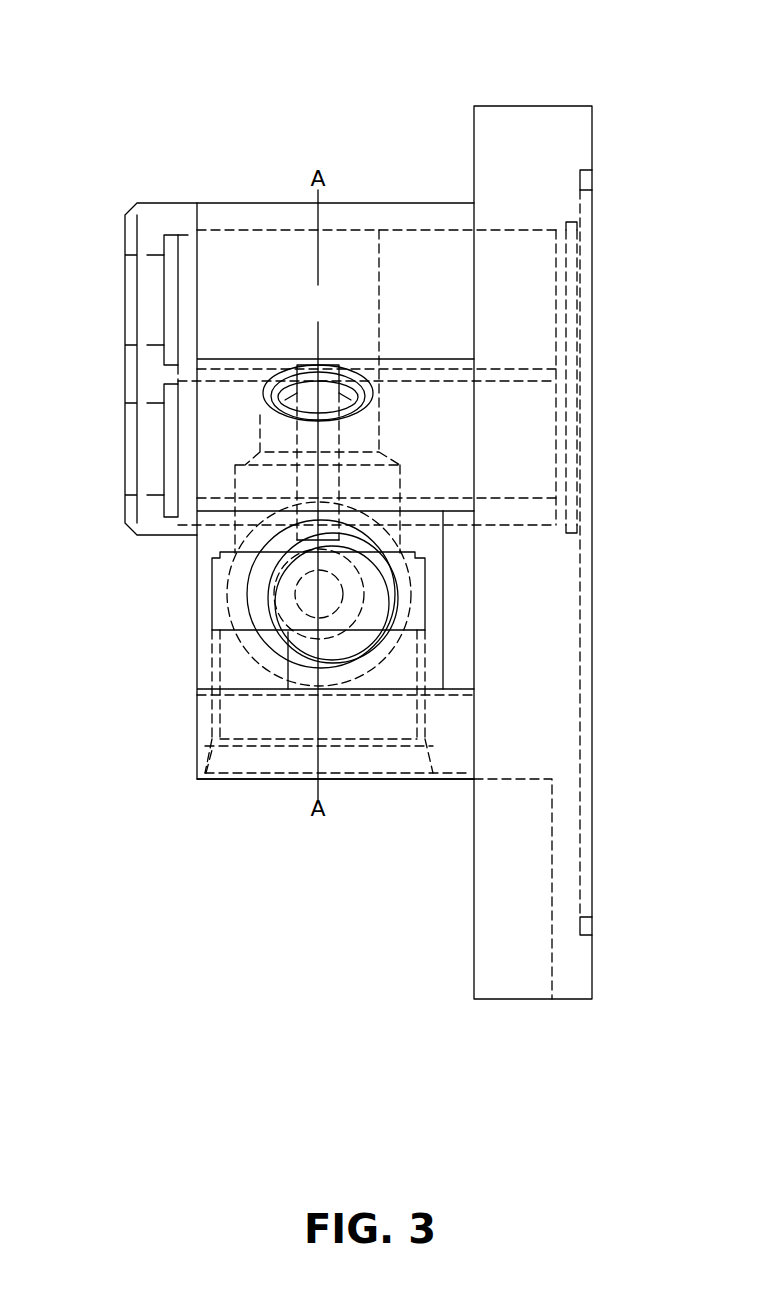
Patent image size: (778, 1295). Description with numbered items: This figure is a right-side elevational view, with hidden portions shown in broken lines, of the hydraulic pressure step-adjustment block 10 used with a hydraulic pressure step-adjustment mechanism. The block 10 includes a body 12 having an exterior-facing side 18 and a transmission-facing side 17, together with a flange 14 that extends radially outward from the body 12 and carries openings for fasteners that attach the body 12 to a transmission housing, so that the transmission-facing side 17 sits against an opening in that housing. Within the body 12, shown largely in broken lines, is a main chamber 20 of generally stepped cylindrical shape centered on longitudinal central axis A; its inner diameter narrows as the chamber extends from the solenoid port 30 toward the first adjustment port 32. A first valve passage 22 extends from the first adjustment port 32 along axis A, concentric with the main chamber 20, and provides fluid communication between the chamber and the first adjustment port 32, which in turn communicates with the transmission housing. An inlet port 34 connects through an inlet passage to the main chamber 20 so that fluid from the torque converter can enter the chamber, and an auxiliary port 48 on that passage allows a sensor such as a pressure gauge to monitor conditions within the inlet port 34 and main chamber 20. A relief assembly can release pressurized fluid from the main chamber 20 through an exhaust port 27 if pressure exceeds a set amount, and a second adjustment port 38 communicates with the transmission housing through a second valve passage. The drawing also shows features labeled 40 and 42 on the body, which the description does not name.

The hydraulic pressure step-adjustment block 10 is at (330, 112).
The body 12 is at (555, 100).
The flange 14 is at (483, 1000).
The transmission-facing side 17 is at (592, 147).
The exterior-facing side 18 is at (474, 157).
The main chamber 20 is at (212, 620).
The first valve passage 22 is at (262, 400).
The exhaust port 27 is at (277, 683).
The solenoid port 30 is at (222, 782).
The first adjustment port 32 is at (544, 230).
The inlet port 34 is at (346, 650).
The second adjustment port 38 is at (536, 525).
The flange 40 is at (125, 215).
The slot 42 is at (153, 257).
The auxiliary port 48 is at (375, 396).